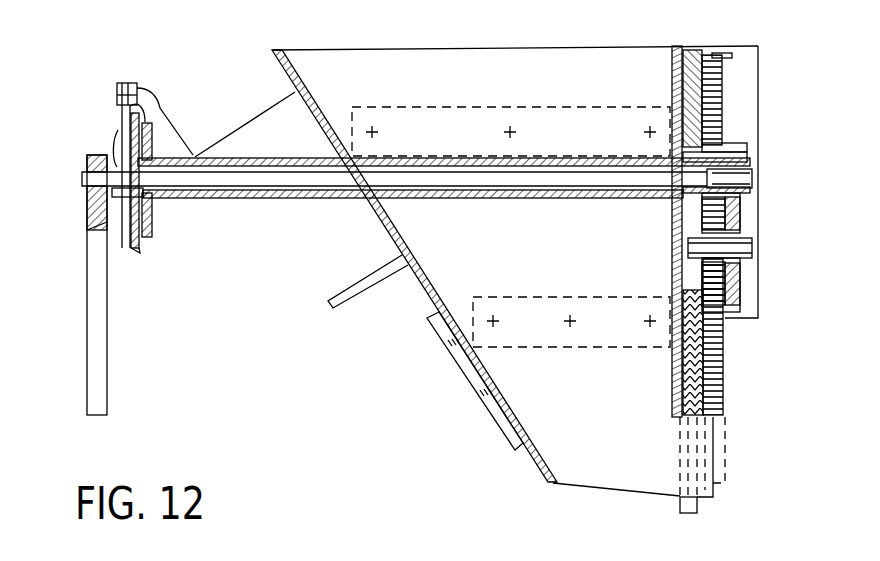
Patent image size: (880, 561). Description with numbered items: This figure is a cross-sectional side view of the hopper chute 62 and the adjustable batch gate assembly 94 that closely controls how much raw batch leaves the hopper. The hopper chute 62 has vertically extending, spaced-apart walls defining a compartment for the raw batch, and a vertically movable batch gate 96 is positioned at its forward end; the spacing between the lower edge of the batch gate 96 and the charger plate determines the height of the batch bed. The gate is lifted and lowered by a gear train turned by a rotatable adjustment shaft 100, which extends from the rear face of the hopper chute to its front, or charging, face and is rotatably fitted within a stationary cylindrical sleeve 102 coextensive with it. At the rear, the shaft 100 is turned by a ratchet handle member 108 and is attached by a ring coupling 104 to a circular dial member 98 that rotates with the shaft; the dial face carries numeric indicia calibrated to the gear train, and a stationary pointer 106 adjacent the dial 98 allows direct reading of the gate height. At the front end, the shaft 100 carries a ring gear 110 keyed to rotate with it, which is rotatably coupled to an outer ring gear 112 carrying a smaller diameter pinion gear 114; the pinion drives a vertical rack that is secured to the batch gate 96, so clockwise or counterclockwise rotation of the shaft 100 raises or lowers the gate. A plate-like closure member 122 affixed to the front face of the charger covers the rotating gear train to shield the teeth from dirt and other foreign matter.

The hopper chute 62 is at (482, 50).
The adjustable batch gate assembly 94 is at (781, 99).
The batch gate 96 is at (697, 505).
The circular dial member 98 is at (140, 253).
The adjustment shaft 100 is at (272, 180).
The cylindrical sleeve 102 is at (207, 200).
The ring coupling 104 is at (117, 167).
The stationary pointer 106 is at (123, 128).
The ratchet handle member 108 is at (93, 383).
The ring gear 110 is at (673, 212).
The outer ring gear 112 is at (723, 371).
The pinion gear 114 is at (740, 300).
The plate-like closure member 122 is at (757, 144).